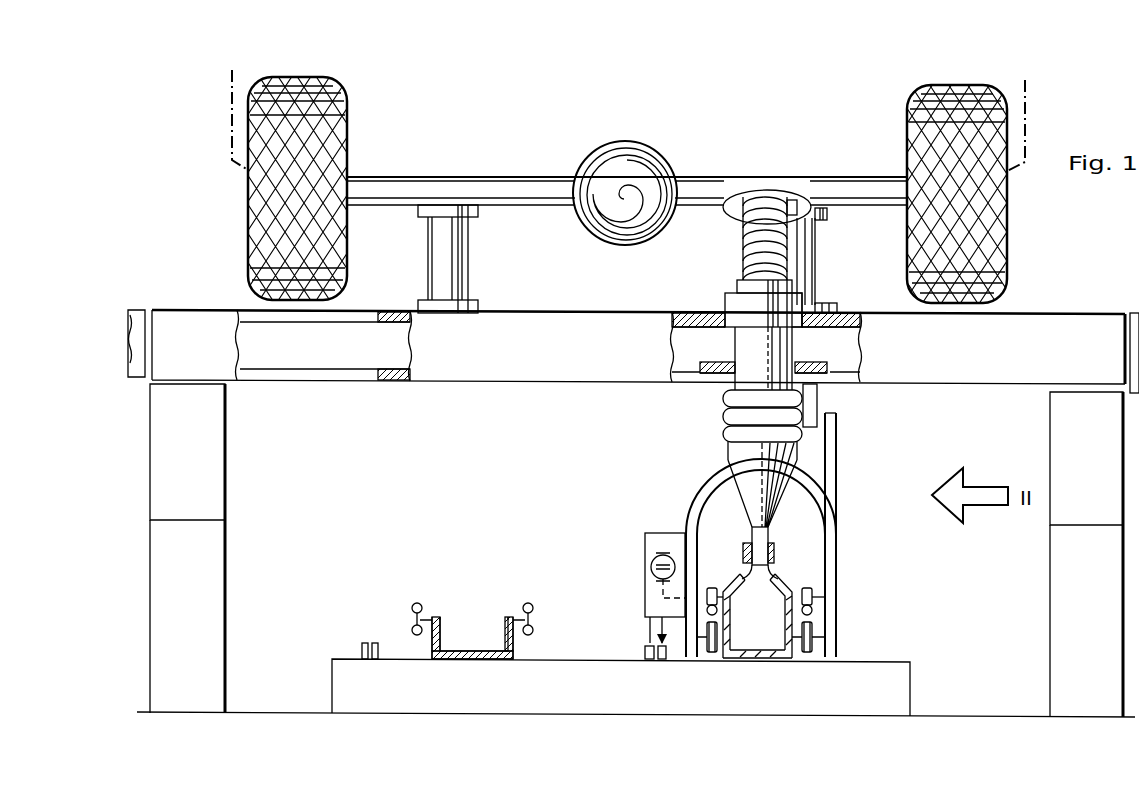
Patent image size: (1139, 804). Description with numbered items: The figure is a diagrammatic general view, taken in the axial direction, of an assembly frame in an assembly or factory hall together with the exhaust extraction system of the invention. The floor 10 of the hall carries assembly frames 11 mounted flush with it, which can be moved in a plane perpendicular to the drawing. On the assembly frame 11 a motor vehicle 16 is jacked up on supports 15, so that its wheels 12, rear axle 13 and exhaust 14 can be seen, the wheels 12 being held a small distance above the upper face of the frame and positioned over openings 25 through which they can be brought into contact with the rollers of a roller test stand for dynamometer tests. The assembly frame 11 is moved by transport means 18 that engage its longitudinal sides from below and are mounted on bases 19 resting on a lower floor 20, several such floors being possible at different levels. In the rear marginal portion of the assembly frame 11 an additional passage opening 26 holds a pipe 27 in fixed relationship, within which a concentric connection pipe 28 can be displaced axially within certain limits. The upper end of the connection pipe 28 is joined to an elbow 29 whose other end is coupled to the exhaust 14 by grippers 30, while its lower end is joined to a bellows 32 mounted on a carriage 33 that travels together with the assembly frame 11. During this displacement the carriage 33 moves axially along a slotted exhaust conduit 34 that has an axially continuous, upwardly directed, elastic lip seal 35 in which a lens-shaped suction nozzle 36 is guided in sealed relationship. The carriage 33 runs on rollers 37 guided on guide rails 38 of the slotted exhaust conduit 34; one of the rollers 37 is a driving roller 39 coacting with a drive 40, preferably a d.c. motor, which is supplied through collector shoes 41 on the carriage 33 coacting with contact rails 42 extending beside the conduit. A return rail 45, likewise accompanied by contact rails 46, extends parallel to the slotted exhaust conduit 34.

The floor 10 is at (1136, 312).
The assembly frame 11 is at (1058, 330).
The wheels 12 is at (345, 122).
The rear axle 13 is at (450, 186).
The exhaust 14 is at (741, 200).
The supports 15 is at (452, 270).
The motor vehicle 16 is at (232, 110).
The transport means 18 is at (210, 487).
The bases 19 is at (205, 604).
The lower floor 20 is at (960, 714).
The openings 25 is at (375, 314).
The passage opening 26 is at (740, 318).
The pipe 27 is at (790, 303).
The connection pipe 28 is at (740, 288).
The elbow 29 is at (780, 240).
The grippers 30 is at (792, 199).
The bellows 32 is at (728, 412).
The carriage 33 is at (874, 480).
The slotted exhaust conduit 34 is at (765, 650).
The lip seal 35 is at (775, 550).
The suction nozzle 36 is at (747, 537).
The rollers 37 is at (810, 583).
The guide rails 38 is at (815, 624).
The driving roller 39 is at (712, 588).
The drive 40 is at (648, 545).
The collector shoes 41 is at (645, 622).
The contact rails 42 is at (642, 660).
The return rail 45 is at (442, 628).
The contact rails 46 is at (362, 642).